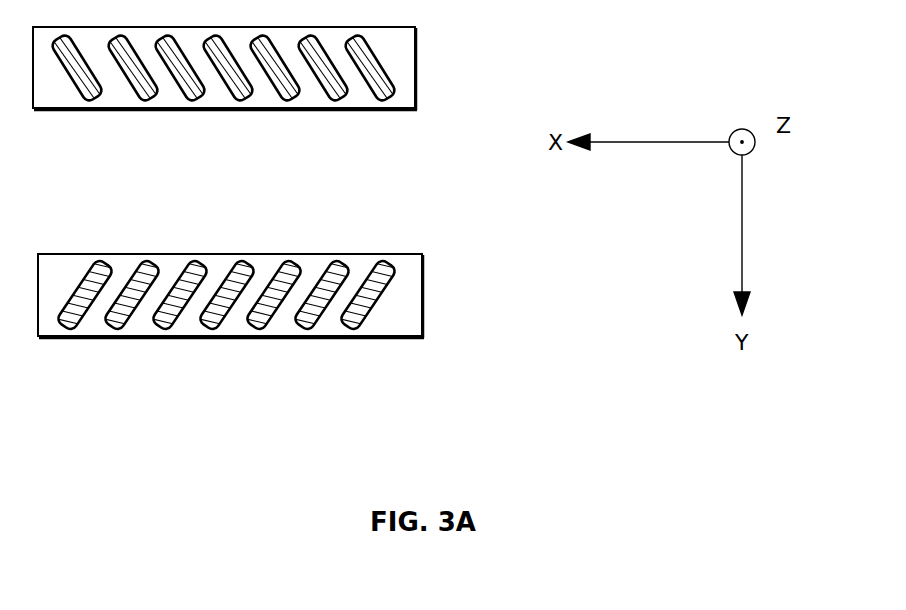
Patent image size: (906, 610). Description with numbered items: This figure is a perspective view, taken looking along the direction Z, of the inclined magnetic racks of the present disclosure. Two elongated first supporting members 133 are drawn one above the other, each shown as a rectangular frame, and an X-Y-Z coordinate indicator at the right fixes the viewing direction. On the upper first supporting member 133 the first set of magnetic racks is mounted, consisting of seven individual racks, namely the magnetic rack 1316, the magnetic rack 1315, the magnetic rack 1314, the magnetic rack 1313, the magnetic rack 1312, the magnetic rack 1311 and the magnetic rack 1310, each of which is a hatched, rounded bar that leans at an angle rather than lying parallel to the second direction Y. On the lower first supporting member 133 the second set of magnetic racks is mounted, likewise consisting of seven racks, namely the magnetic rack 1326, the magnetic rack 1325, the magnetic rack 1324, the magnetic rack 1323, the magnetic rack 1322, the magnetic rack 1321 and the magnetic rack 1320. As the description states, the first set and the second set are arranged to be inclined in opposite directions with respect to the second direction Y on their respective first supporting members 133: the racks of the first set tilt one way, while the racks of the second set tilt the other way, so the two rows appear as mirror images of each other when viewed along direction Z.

The first supporting member 133 is at (417, 38).
The magnetic rack of the first set 1310 is at (415, 110).
The magnetic rack of the first set 1311 is at (360, 112).
The magnetic rack of the first set 1312 is at (303, 110).
The magnetic rack of the first set 1313 is at (263, 112).
The magnetic rack of the first set 1314 is at (203, 112).
The magnetic rack of the first set 1315 is at (163, 112).
The magnetic rack of the first set 1316 is at (73, 103).
The magnetic rack of the second set 1320 is at (383, 336).
The magnetic rack of the second set 1321 is at (313, 335).
The magnetic rack of the second set 1322 is at (282, 335).
The magnetic rack of the second set 1323 is at (230, 337).
The magnetic rack of the second set 1324 is at (177, 337).
The magnetic rack of the second set 1325 is at (120, 335).
The magnetic rack of the second set 1326 is at (73, 332).